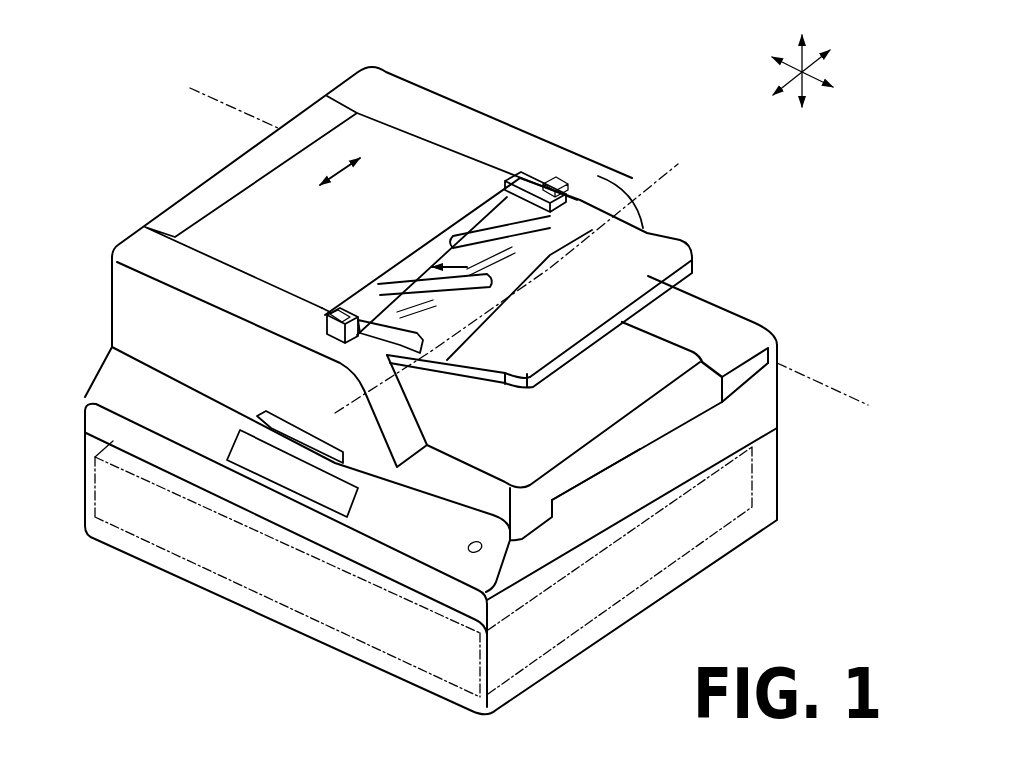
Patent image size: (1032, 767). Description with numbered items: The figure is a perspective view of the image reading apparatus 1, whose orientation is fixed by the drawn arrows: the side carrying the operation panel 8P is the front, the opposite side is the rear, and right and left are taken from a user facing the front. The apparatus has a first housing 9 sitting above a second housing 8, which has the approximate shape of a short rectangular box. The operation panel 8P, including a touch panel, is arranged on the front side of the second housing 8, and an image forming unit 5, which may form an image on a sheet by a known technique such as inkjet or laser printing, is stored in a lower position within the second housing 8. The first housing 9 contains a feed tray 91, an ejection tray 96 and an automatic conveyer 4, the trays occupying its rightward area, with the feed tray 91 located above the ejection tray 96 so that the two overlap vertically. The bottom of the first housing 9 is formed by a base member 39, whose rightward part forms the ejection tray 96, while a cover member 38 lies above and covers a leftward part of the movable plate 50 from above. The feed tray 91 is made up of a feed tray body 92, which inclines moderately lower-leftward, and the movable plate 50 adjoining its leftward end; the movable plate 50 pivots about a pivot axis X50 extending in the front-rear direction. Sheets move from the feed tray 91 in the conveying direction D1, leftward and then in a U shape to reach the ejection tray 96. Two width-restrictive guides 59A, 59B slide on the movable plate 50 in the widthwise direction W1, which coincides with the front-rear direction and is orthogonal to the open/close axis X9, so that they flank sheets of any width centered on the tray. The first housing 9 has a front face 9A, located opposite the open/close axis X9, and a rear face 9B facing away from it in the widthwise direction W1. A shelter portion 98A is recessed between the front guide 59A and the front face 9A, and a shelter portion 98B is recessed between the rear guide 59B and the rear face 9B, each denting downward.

The image reading apparatus 1 is at (553, 100).
The automatic conveyer 4 is at (238, 230).
The image forming unit 5 is at (373, 626).
The second housing 8 is at (762, 540).
The operation panel 8P is at (287, 470).
The first housing 9 is at (108, 245).
The front face 9A is at (207, 340).
The rear face 9B is at (463, 142).
The cover member 38 is at (273, 210).
The base member 39 is at (637, 453).
The movable plate 50 is at (502, 264).
The width-restrictive guide 59A is at (358, 312).
The width-restrictive guide 59B is at (588, 181).
The feed tray 91 is at (807, 231).
The feed tray body 92 is at (568, 296).
The ejection tray 96 is at (630, 382).
The shelter portion 98A is at (336, 327).
The shelter portion 98B is at (547, 215).
The open/close axis X9 is at (515, 234).
The pivot axis X50 is at (526, 274).
The widthwise direction W1 is at (337, 165).
The conveying direction D1 is at (445, 267).